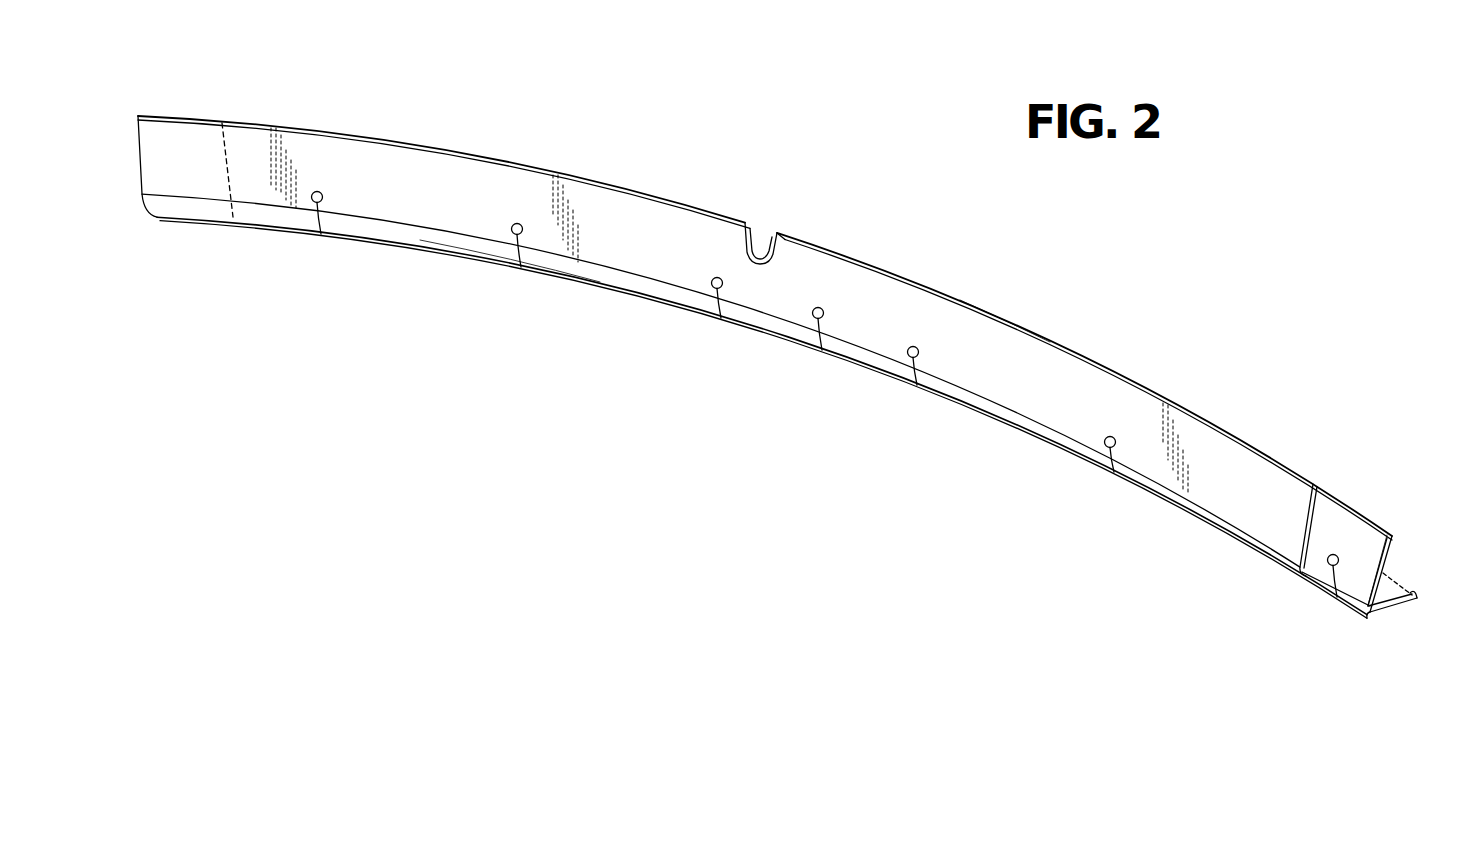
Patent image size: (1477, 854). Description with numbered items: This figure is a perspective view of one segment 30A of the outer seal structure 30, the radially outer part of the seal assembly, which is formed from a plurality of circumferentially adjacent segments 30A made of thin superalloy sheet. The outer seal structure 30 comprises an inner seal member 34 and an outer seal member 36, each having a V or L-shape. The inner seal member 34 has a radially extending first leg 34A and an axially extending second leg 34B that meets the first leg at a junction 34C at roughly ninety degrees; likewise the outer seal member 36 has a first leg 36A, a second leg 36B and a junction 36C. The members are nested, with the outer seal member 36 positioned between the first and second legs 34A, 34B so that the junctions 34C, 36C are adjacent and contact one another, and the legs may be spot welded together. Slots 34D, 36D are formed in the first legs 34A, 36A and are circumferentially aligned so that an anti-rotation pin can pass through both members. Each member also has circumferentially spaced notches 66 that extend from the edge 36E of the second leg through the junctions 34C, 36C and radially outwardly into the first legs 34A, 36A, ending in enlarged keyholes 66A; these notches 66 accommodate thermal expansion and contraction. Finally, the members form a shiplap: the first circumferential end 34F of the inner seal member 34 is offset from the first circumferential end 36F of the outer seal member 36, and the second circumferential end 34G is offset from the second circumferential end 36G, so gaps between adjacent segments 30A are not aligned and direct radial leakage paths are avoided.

The outer seal structure 30 is at (750, 368).
The outer seal structure segment 30A is at (497, 264).
The inner seal member 34 is at (132, 189).
The first leg of inner seal member 34A is at (1270, 531).
The second leg of inner seal member 34B is at (1308, 580).
The junction of inner seal member 34C is at (1003, 422).
The slot of inner seal member 34D is at (777, 236).
The first circumferential end of inner seal member 34F is at (138, 140).
The second circumferential end of inner seal member 34G is at (1323, 507).
The outer seal member 36 is at (1413, 618).
The first leg of outer seal member 36A is at (1362, 535).
The second leg of outer seal member 36B is at (1410, 614).
The junction of outer seal member 36C is at (1365, 618).
The slot of outer seal member 36D is at (762, 231).
The edge of second leg of outer seal member 36E is at (1383, 577).
The first circumferential end of outer seal member 36F is at (220, 157).
The second circumferential end of outer seal member 36G is at (1393, 548).
The notch 66 is at (318, 222).
The keyhole 66A is at (320, 190).